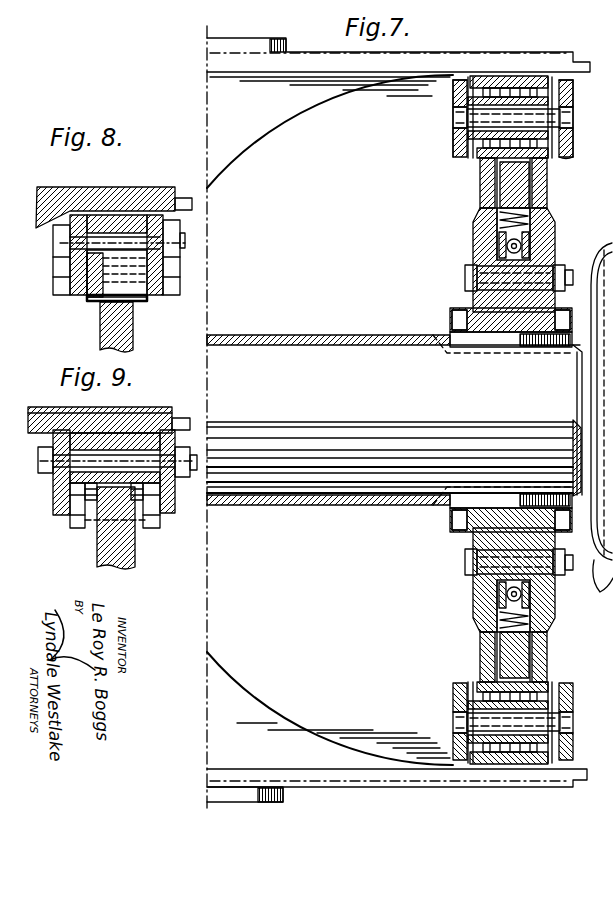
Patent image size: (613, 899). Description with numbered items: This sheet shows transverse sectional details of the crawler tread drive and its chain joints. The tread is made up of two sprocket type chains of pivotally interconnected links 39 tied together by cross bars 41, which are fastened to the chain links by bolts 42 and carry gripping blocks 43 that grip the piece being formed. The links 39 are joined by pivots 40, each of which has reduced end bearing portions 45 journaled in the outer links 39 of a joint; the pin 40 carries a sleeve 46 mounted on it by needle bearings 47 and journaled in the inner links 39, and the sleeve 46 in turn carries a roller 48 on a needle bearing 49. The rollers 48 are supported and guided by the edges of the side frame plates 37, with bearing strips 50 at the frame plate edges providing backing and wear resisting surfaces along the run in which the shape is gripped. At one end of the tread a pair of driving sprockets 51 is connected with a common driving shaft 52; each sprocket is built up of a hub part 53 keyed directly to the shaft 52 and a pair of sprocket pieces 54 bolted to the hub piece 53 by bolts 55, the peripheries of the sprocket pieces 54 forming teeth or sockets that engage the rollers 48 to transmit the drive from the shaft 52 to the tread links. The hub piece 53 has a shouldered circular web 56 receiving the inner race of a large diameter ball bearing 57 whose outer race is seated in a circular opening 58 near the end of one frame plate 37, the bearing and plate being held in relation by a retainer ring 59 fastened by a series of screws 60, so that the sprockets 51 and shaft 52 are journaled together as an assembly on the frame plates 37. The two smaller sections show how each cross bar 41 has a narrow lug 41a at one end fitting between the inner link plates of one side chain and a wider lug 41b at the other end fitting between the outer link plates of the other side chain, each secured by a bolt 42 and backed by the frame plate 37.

In FIG. 7, the side frame plate 37 is at (515, 628).
In FIG. 8, the side frame plate 37 is at (133, 336).
In FIG. 9, the side frame plate 37 is at (135, 555).
In FIG. 7, the chain link 39 is at (455, 155).
In FIG. 8, the chain link 39 is at (68, 290).
In FIG. 9, the chain link 39 is at (55, 505).
In FIG. 7, the pivot 40 is at (476, 117).
In FIG. 7, the cross bar 41 is at (486, 56).
In FIG. 8, the cross bar 41 is at (125, 197).
In FIG. 9, the cross bar 41 is at (150, 413).
In FIG. 7, the narrow lug 41a is at (566, 157).
In FIG. 8, the narrow lug 41a is at (95, 292).
In FIG. 9, the wide lug 41b is at (82, 500).
In FIG. 8, the bolt 42 is at (184, 249).
In FIG. 9, the bolt 42 is at (193, 478).
In FIG. 7, the gripping block 43 is at (286, 39).
In FIG. 7, the reduced end bearing portion 45 is at (573, 118).
In FIG. 7, the sleeve 46 is at (455, 95).
In FIG. 7, the needle bearing 47 is at (573, 92).
In FIG. 7, the roller 48 is at (515, 76).
In FIG. 8, the roller 48 is at (105, 285).
In FIG. 9, the roller 48 is at (140, 520).
In FIG. 7, the needle bearing 49 is at (532, 80).
In FIG. 7, the bearing strip 50 is at (545, 652).
In FIG. 7, the driving sprocket 51 is at (562, 230).
In FIG. 7, the driving shaft 52 is at (309, 348).
In FIG. 7, the hub part 53 is at (480, 320).
In FIG. 7, the sprocket piece 54 is at (484, 197).
In FIG. 7, the bolt 55 is at (466, 275).
In FIG. 7, the shouldered circular web 56 is at (480, 541).
In FIG. 7, the ball bearing 57 is at (490, 580).
In FIG. 7, the circular opening 58 is at (515, 597).
In FIG. 7, the retainer ring 59 is at (500, 214).
In FIG. 7, the screw 60 is at (500, 236).